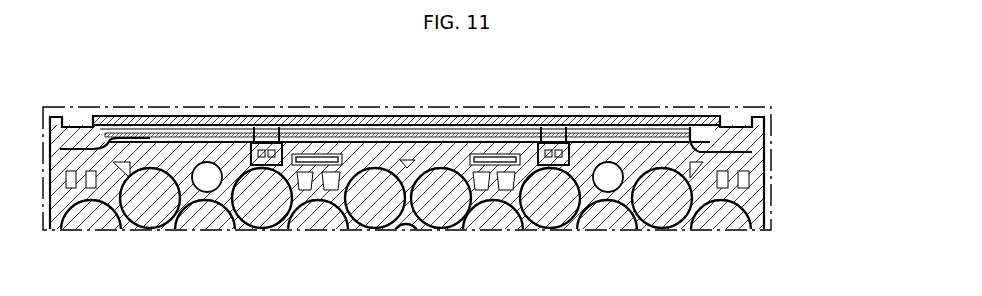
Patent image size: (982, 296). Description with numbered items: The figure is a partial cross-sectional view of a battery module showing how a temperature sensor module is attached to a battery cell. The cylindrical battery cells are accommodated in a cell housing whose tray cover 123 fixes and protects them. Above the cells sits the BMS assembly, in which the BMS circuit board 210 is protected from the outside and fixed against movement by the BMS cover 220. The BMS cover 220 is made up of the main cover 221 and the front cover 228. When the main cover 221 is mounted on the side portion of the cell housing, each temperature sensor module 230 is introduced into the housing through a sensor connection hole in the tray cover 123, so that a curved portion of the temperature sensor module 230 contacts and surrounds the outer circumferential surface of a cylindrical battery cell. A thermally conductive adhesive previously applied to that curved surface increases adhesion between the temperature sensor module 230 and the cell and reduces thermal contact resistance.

The tray cover 123 is at (752, 205).
The BMS circuit board 210 is at (353, 138).
The BMS cover 220 is at (830, 130).
The main cover 221 is at (757, 173).
The front cover 228 is at (757, 137).
The temperature sensor module 230 is at (283, 140).